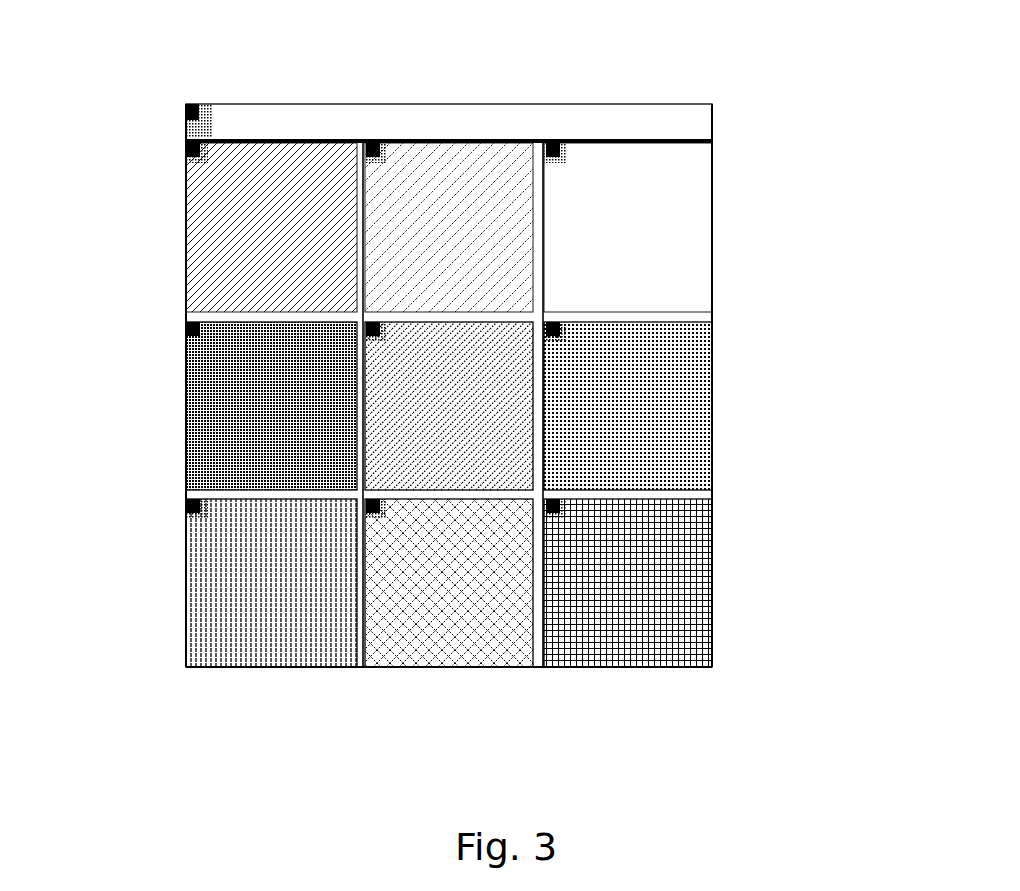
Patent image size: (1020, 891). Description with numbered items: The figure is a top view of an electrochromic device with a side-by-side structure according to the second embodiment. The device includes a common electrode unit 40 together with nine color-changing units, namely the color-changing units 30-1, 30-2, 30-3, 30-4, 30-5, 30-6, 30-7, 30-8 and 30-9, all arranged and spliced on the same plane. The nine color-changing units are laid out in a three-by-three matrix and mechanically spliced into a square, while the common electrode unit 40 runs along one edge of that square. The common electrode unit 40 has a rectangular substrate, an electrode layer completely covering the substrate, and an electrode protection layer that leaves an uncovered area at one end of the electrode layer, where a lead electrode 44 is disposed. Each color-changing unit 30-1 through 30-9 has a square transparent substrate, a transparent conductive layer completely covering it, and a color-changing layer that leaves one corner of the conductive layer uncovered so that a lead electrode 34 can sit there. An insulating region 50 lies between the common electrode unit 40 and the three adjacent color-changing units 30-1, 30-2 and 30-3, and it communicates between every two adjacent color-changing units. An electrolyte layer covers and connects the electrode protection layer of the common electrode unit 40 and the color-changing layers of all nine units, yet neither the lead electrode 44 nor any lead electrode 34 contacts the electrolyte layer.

The common electrode unit 40 is at (616, 118).
The lead electrode 44 is at (188, 110).
The lead electrode 34 is at (190, 150).
The insulating region 50 is at (360, 668).
The color-changing unit 30-1 is at (213, 236).
The color-changing unit 30-2 is at (480, 272).
The color-changing unit 30-3 is at (662, 228).
The color-changing unit 30-4 is at (213, 407).
The color-changing unit 30-5 is at (475, 452).
The color-changing unit 30-6 is at (685, 404).
The color-changing unit 30-7 is at (215, 573).
The color-changing unit 30-8 is at (470, 643).
The color-changing unit 30-9 is at (680, 588).